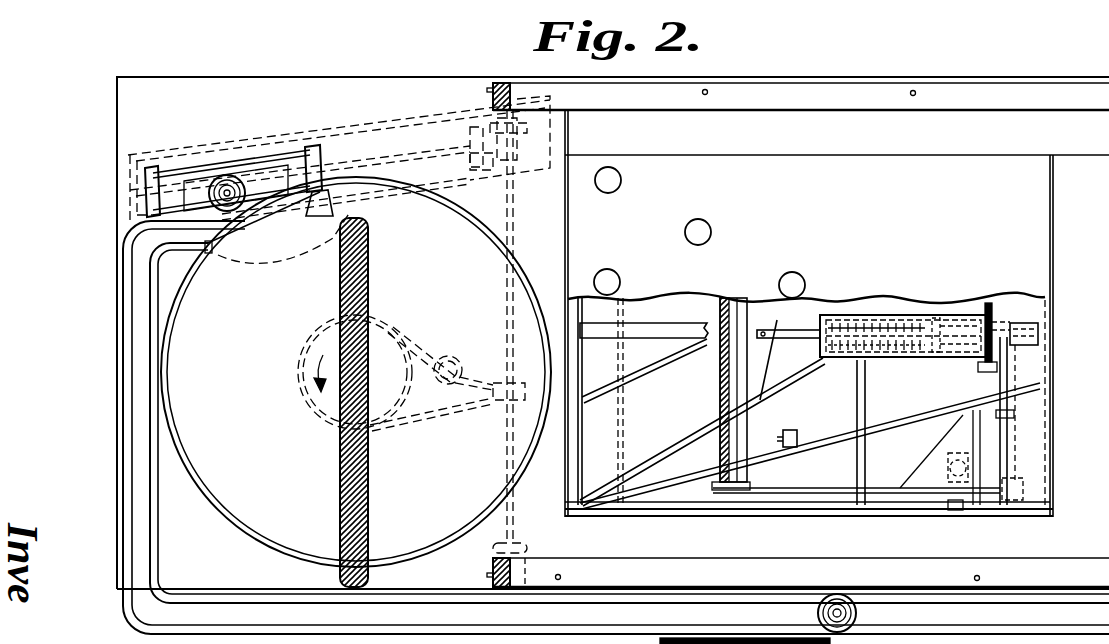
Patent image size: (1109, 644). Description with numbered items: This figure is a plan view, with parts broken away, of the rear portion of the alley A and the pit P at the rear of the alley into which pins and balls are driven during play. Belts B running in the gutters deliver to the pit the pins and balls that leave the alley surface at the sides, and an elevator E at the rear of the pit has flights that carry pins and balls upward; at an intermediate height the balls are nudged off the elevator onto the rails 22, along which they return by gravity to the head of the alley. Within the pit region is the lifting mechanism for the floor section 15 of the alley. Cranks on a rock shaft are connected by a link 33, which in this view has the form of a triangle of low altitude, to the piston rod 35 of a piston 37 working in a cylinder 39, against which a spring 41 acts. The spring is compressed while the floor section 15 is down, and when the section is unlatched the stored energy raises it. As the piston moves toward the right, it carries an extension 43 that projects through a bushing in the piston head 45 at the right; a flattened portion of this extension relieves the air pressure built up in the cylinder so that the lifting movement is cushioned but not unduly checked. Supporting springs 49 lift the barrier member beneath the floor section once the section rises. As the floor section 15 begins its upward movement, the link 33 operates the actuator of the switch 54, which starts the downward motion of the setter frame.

The elevator E is at (204, 172).
The rails 22 is at (152, 313).
The pit P is at (258, 546).
The belts B is at (799, 99).
The alley A is at (829, 313).
The floor section 15 is at (846, 170).
The piston rod 35 is at (790, 338).
The link 33 is at (758, 353).
The switch 54 is at (792, 433).
The cylinder 39 is at (890, 318).
The piston 37 is at (940, 318).
The extension 43 is at (971, 310).
The piston head 45 is at (1040, 300).
The spring 41 is at (897, 358).
The supporting springs 49 is at (948, 468).